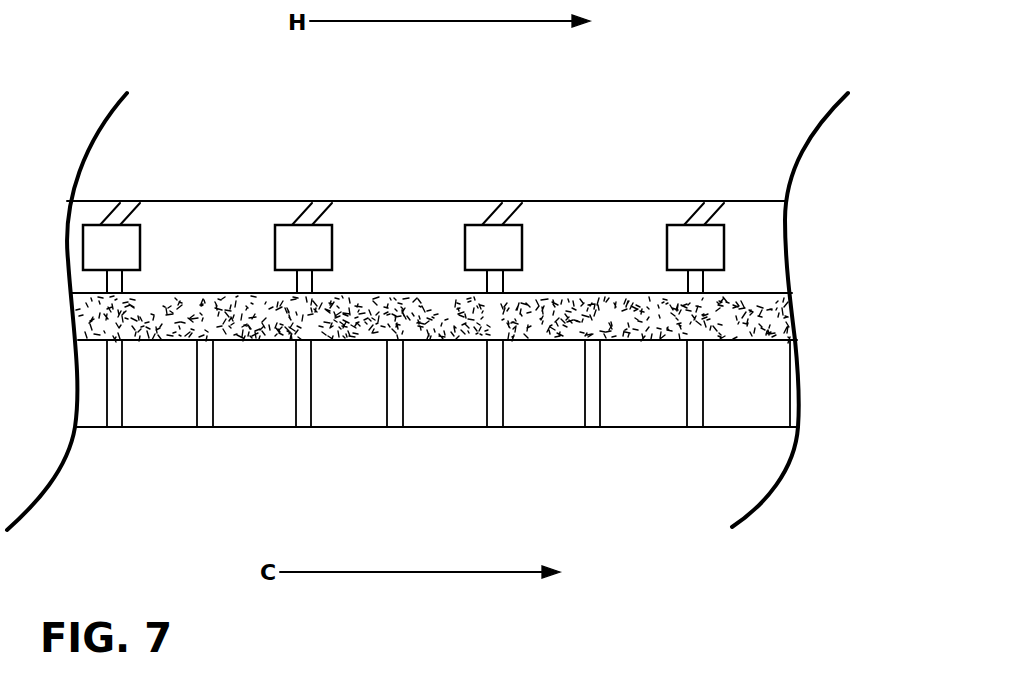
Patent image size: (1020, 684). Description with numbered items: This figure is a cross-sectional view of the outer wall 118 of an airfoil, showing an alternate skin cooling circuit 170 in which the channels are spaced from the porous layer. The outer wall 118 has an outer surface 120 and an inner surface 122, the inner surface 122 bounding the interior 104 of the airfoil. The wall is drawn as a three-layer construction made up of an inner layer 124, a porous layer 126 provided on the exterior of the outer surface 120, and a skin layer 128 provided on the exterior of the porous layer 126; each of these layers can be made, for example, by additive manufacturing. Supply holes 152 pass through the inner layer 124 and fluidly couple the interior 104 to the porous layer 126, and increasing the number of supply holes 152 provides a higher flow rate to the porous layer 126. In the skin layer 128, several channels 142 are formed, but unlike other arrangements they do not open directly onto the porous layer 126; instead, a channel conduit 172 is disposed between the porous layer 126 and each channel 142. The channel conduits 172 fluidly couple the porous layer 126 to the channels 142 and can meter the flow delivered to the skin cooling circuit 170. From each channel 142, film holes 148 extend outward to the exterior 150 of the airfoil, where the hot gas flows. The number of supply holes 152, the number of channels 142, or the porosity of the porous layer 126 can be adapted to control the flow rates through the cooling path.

The interior 104 is at (425, 549).
The outer wall 118 is at (209, 95).
The outer surface 120 is at (238, 342).
The inner surface 122 is at (467, 430).
The inner layer 124 is at (817, 409).
The porous layer 126 is at (772, 316).
The skin layer 128 is at (803, 228).
The channel 142 is at (83, 245).
The film hole 148 is at (110, 203).
The exterior 150 is at (473, 74).
The supply hole 152 is at (122, 395).
The skin cooling circuit 170 is at (58, 246).
The channel conduit 172 is at (124, 282).